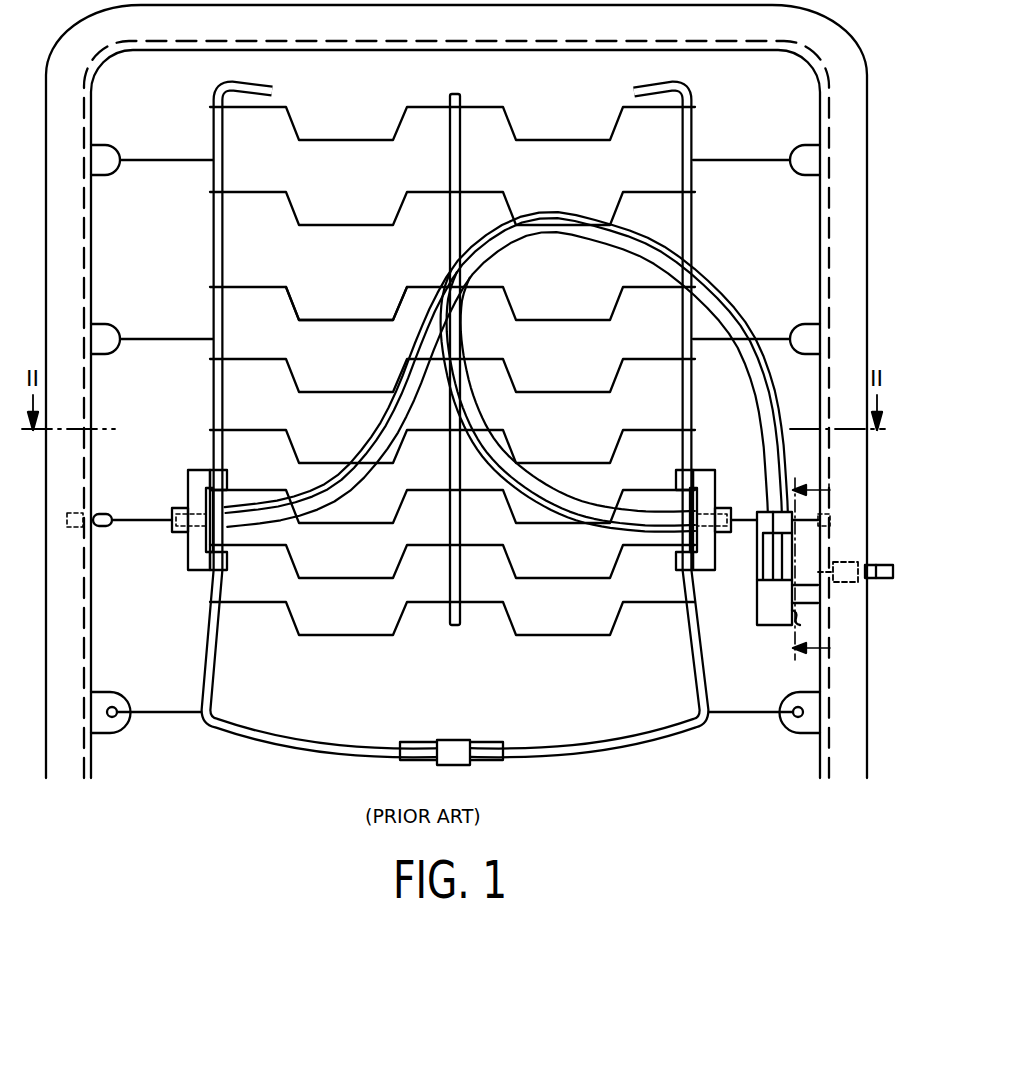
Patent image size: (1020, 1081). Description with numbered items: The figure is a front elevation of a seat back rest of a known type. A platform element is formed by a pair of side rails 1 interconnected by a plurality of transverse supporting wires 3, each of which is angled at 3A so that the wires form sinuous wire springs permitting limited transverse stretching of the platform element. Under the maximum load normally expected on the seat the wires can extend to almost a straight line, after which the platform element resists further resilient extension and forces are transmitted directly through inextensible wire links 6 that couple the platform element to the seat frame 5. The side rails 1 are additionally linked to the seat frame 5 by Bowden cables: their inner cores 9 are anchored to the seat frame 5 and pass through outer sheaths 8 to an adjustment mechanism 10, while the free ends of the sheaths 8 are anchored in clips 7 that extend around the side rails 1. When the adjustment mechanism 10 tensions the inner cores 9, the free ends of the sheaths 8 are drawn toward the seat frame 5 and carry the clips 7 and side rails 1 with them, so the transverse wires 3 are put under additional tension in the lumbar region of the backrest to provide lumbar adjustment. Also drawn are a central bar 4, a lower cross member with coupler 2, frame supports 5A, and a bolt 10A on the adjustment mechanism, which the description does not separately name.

The side rails 1 is at (212, 218).
The bottom bar coupler 2 is at (462, 740).
The transverse supporting wires 3 is at (347, 637).
The angled portion of wire 3A is at (297, 306).
The central bar 4 is at (450, 159).
The seat frame 5 is at (192, 40).
The left support 5A is at (113, 150).
The wire links 6 is at (745, 160).
The clips 7 is at (188, 475).
The outer sheaths 8 is at (622, 519).
The inner cores 9 is at (141, 524).
The adjustment mechanism 10 is at (838, 600).
The coupling bolt 10A is at (833, 567).